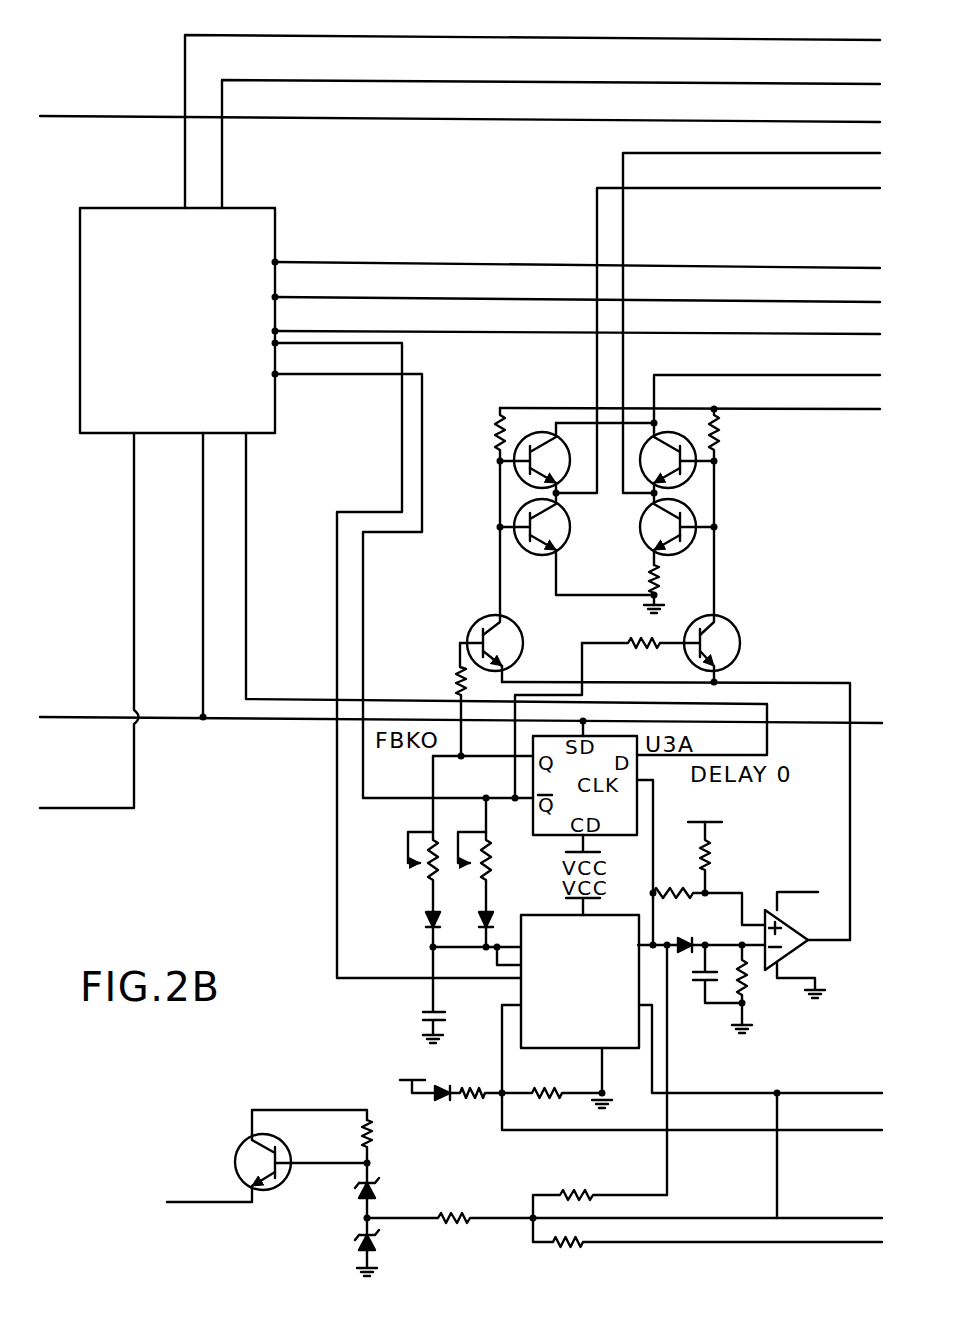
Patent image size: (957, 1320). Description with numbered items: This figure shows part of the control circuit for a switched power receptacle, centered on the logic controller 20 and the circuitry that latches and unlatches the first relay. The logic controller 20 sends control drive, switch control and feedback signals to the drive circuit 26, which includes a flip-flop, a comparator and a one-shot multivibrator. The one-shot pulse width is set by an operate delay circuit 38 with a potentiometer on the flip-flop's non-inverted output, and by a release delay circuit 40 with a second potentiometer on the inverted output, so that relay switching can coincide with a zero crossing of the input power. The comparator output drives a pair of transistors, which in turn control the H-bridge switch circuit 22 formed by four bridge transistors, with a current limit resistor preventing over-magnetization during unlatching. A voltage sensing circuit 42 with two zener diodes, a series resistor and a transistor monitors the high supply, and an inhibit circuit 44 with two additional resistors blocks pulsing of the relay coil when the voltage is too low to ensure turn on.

The logic controller 20 is at (268, 212).
The first switch circuit 22 is at (748, 494).
The drive circuit 26 is at (770, 852).
The operate delay circuit 38 is at (393, 868).
The release delay circuit 40 is at (499, 882).
The voltage sensing circuit 42 is at (322, 1095).
The inhibit circuit 44 is at (608, 1188).